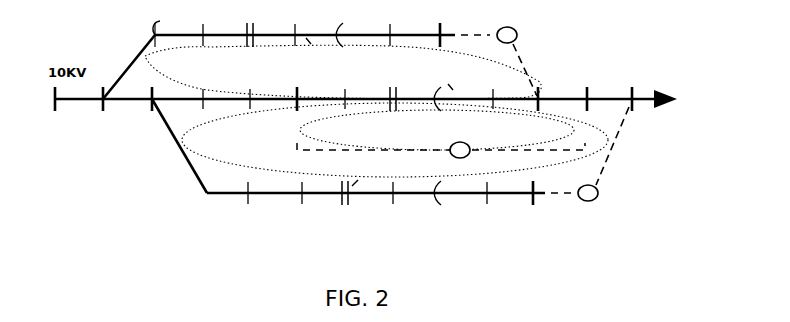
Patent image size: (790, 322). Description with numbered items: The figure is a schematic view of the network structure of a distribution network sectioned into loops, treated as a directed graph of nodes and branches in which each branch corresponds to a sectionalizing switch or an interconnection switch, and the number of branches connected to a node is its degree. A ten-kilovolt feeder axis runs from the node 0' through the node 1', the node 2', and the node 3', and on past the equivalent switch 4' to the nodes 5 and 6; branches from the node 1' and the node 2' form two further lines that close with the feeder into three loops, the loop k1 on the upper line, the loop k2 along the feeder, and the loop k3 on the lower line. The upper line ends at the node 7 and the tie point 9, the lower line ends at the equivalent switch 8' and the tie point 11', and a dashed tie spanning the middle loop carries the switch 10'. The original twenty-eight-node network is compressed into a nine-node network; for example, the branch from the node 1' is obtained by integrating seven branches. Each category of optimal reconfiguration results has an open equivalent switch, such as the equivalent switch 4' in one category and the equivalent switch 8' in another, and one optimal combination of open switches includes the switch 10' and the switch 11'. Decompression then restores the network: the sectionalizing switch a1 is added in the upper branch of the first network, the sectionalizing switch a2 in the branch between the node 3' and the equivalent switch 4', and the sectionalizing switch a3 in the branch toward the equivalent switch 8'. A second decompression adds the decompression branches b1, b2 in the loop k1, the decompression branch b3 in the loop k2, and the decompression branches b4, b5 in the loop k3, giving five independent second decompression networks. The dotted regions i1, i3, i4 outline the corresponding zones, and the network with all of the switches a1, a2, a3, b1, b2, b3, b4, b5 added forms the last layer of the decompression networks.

The node 0' is at (55, 110).
The node 1' is at (103, 110).
The node 2' is at (148, 110).
The node 3' is at (288, 110).
The equivalent switch 4' is at (546, 110).
The node 5 is at (586, 110).
The node 6 is at (634, 110).
The node 7 is at (438, 44).
The equivalent switch 8' is at (533, 202).
The tie point 9 is at (502, 45).
The switch 10' is at (459, 161).
The switch 11' is at (597, 204).
The sectionalizing switch a1 is at (249, 45).
The sectionalizing switch a2 is at (397, 113).
The sectionalizing switch a3 is at (344, 203).
The decompression branch b1 is at (167, 41).
The decompression branch b2 is at (348, 47).
The decompression branch b3 is at (442, 113).
The decompression branch b4 is at (259, 203).
The decompression branch b5 is at (445, 203).
The loop K1 k1 is at (314, 48).
The loop K2 k2 is at (456, 92).
The loop K3 k3 is at (363, 184).
The protection zone i1 is at (352, 92).
The protection zone i3 is at (487, 137).
The protection zone i4 is at (501, 173).